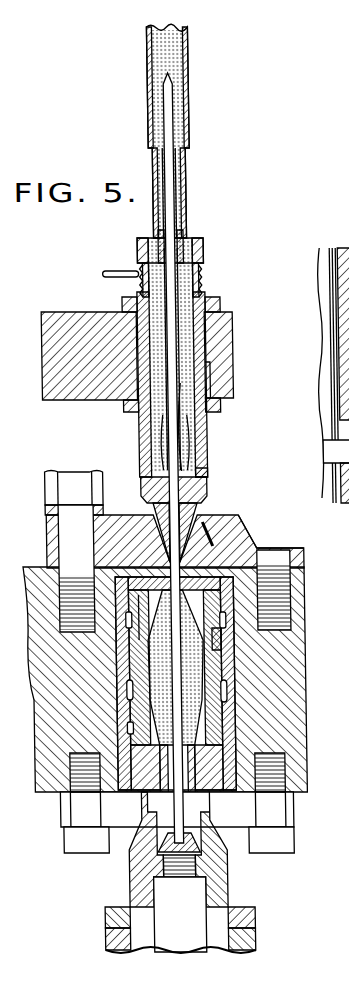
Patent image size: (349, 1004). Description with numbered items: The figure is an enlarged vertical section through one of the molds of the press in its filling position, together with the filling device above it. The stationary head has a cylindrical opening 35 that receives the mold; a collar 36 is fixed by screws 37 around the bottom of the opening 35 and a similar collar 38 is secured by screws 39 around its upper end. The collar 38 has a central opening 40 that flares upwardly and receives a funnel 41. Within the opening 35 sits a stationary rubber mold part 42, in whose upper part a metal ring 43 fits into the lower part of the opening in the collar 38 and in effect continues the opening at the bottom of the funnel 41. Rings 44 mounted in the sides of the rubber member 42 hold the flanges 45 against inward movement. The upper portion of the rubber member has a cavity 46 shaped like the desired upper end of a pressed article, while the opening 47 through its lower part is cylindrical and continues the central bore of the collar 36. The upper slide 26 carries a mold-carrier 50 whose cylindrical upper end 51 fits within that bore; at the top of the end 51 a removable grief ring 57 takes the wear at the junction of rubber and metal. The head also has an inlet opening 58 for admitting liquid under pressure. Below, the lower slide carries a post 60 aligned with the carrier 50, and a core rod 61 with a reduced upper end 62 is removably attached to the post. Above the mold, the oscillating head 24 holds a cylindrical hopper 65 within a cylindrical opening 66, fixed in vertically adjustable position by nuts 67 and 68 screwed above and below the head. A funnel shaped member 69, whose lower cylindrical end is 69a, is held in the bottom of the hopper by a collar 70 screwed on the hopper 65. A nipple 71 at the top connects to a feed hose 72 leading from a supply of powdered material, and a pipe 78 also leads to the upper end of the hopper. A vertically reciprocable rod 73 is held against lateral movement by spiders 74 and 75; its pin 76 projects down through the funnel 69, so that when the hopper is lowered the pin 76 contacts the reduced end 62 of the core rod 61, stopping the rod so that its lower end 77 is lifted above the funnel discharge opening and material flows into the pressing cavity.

The oscillating head 24 is at (64, 320).
The upper slide 26 is at (295, 726).
The cylindrical opening 35 is at (112, 672).
The collar 36 is at (52, 815).
The screws 37 is at (77, 853).
The collar 38 is at (218, 535).
The screws 39 is at (55, 470).
The central opening 40 is at (233, 552).
The funnel 41 is at (193, 530).
The rubber mold part 42 is at (112, 580).
The metal ring 43 is at (128, 600).
The rings 44 is at (226, 641).
The flanges 45 is at (118, 640).
The cavity 46 is at (127, 585).
The opening 47 is at (112, 700).
The mold-carrier 50 is at (244, 918).
The cylindrical upper end 51 is at (204, 826).
The grief ring 57 is at (124, 826).
The inlet opening 58 is at (225, 701).
The post 60 is at (167, 935).
The core rod 61 is at (118, 731).
The reduced upper end 62 is at (277, 561).
The cylindrical hopper 65 is at (200, 345).
The cylindrical opening 66 is at (206, 365).
The nut 67 is at (218, 303).
The nut 68 is at (216, 406).
The funnel shaped member 69 is at (200, 480).
The lower cylindrical end 69a is at (206, 540).
The collar 70 is at (198, 495).
The nipple 71 is at (186, 197).
The feed hose 72 is at (189, 79).
The vertically reciprocable rod 73 is at (172, 159).
The spider 74 is at (196, 288).
The spider 75 is at (145, 408).
The pin 76 is at (180, 470).
The lower end 77 is at (177, 391).
The pipe 78 is at (112, 271).